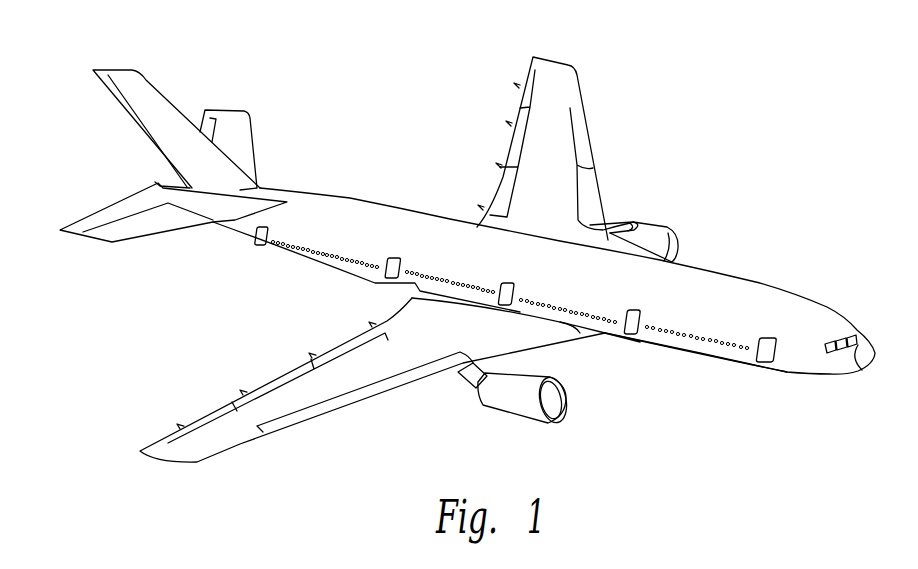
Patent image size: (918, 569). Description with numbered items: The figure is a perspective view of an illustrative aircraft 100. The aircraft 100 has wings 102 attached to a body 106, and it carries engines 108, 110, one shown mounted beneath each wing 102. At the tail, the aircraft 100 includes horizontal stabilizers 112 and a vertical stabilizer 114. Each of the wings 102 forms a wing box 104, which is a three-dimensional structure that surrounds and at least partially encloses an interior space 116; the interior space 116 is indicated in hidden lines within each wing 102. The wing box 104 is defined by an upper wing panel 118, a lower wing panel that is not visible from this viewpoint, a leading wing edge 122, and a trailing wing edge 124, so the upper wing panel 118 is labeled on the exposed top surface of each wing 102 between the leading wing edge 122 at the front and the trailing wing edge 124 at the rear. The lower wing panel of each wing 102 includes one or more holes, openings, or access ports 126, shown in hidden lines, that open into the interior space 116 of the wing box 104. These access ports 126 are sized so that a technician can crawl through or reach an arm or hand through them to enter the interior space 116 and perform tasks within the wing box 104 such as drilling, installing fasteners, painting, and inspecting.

The aircraft 100 is at (770, 106).
The wings 102 is at (565, 70).
The wing box 104 is at (488, 112).
The body 106 is at (725, 287).
The engine 108 is at (660, 230).
The engine 110 is at (524, 413).
The horizontal stabilizers 112 is at (238, 117).
The vertical stabilizer 114 is at (127, 80).
The interior space 116 is at (548, 160).
The upper wing panel 118 is at (560, 218).
The leading wing edge 122 is at (600, 190).
The trailing wing edge 124 is at (497, 190).
The access ports 126 is at (580, 112).